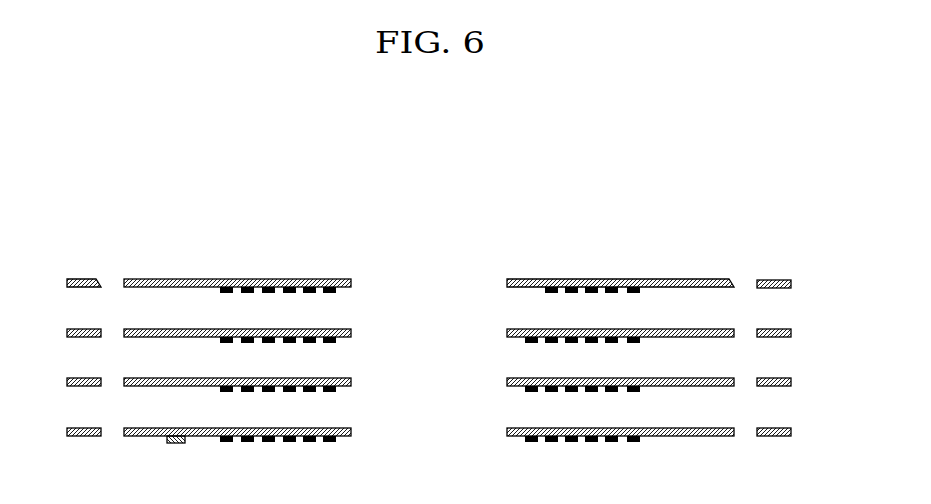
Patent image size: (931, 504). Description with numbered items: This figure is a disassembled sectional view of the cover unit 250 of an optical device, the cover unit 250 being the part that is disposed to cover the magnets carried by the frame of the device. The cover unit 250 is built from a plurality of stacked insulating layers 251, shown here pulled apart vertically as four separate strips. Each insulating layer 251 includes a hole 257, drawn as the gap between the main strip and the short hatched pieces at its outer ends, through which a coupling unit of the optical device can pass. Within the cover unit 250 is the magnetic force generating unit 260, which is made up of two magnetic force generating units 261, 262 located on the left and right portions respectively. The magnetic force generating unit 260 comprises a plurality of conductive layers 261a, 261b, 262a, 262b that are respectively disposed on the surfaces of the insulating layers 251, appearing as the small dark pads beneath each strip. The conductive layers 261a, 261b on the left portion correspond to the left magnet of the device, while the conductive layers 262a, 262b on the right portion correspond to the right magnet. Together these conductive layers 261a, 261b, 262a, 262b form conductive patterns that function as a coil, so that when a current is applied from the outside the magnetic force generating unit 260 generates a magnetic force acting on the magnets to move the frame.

The cover unit 250 is at (96, 145).
The insulating layer 251 is at (185, 328).
The hole 257 is at (99, 284).
The magnetic force generating unit 260 is at (497, 160).
The magnetic force generating unit 261 is at (283, 305).
The conductive layer 261a is at (250, 300).
The conductive layer 261b is at (272, 349).
The magnetic force generating unit 262 is at (547, 304).
The conductive layer 262a is at (565, 301).
The conductive layer 262b is at (522, 347).